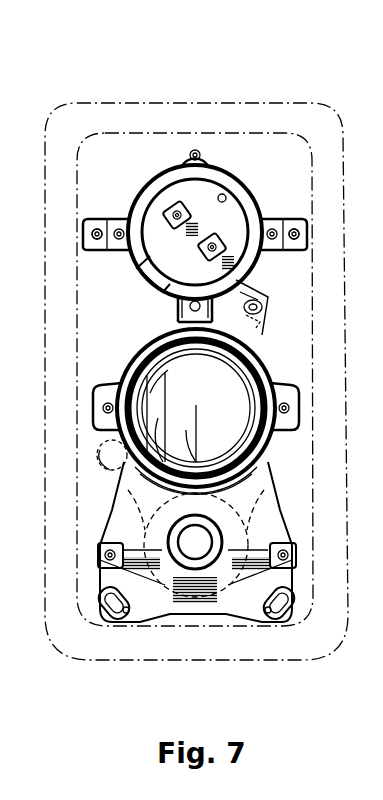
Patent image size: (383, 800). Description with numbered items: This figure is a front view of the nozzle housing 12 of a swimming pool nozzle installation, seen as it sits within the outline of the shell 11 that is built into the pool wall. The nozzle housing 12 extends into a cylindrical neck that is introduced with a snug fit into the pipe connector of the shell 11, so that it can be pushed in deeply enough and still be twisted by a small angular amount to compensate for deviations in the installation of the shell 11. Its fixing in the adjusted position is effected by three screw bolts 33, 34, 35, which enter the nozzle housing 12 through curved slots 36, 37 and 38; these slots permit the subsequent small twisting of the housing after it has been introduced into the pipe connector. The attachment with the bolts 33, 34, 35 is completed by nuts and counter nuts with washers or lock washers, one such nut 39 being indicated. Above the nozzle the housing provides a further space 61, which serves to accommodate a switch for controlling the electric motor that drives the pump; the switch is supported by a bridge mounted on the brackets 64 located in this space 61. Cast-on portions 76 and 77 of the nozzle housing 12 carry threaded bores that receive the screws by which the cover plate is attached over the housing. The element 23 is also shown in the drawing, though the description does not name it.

The shell 11 is at (293, 96).
The nozzle housing 12 is at (262, 197).
The bearing 23 is at (110, 468).
The screw bolt 33 is at (255, 294).
The screw bolt 34 is at (113, 620).
The screw bolt 35 is at (285, 620).
The curved slot 36 is at (264, 309).
The curved slot 37 is at (127, 616).
The curved slot 38 is at (272, 620).
The nut 39 is at (262, 324).
The space 61 is at (225, 196).
The bracket 64 is at (202, 250).
The cast-on portion 76 is at (100, 219).
The cast-on portion 77 is at (108, 543).